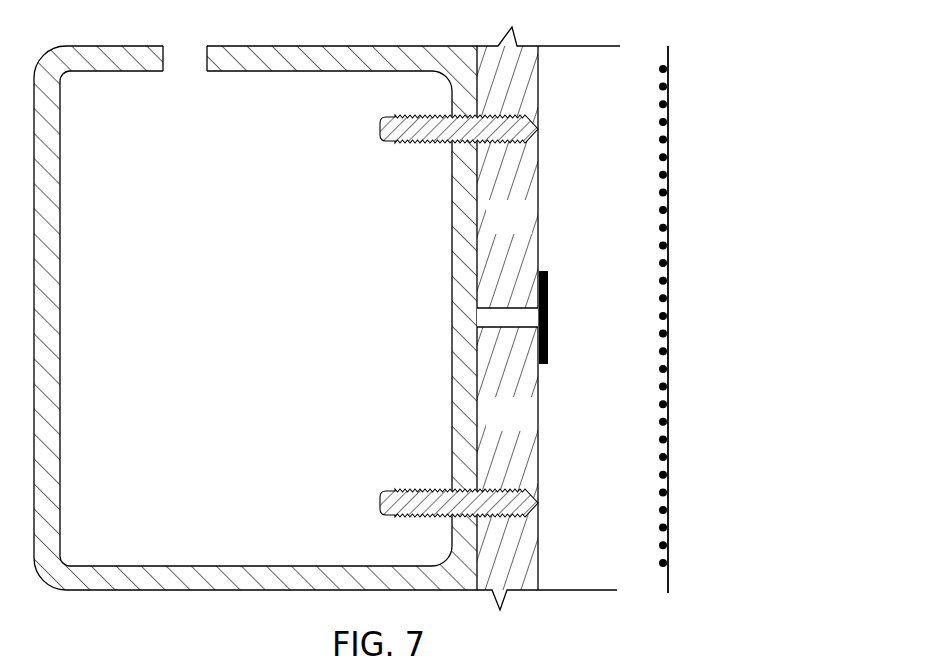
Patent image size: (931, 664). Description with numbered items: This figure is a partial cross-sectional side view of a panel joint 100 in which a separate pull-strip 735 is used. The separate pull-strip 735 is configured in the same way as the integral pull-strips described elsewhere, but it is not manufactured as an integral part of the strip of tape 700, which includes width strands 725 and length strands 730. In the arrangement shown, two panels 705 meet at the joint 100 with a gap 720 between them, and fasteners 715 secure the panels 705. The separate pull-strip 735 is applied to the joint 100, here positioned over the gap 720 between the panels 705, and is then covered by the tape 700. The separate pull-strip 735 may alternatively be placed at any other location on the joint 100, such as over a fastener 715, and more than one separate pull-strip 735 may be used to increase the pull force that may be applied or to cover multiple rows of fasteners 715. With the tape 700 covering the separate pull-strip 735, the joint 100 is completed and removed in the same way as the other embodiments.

The tape 700 is at (411, 318).
The joint 100 is at (306, 256).
The panels 705 is at (526, 230).
The fastener 715 is at (422, 143).
The gap 720 is at (498, 326).
The width strands 725 is at (668, 200).
The length strands 730 is at (662, 102).
The separate pull-strip 735 is at (548, 345).